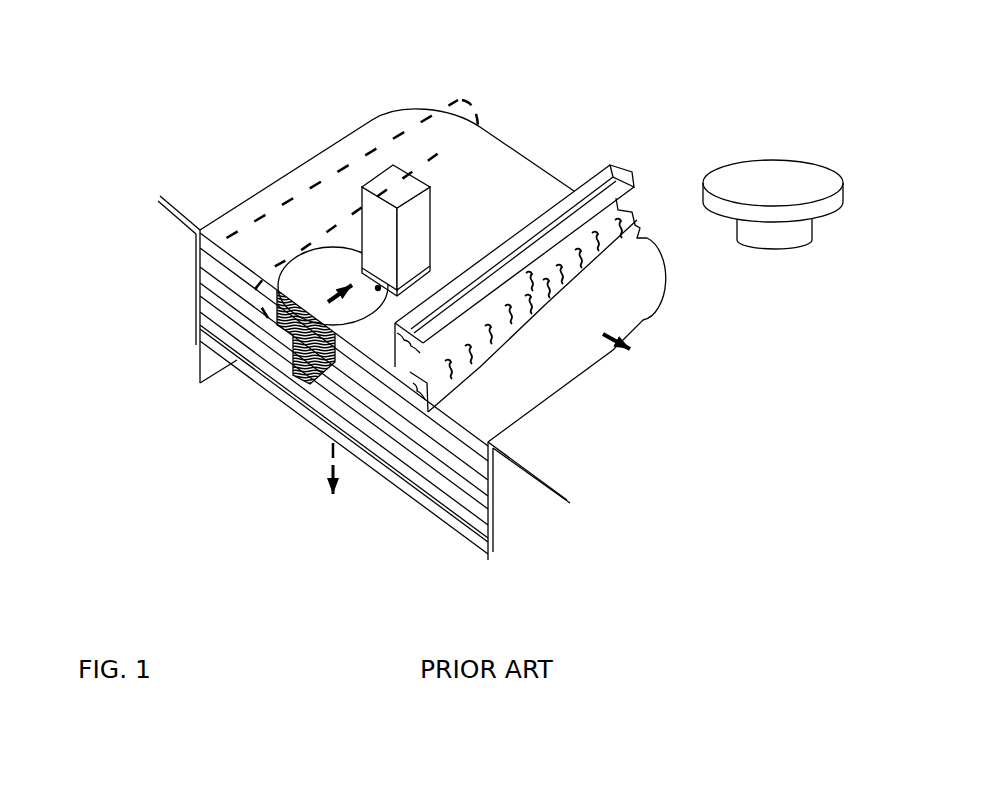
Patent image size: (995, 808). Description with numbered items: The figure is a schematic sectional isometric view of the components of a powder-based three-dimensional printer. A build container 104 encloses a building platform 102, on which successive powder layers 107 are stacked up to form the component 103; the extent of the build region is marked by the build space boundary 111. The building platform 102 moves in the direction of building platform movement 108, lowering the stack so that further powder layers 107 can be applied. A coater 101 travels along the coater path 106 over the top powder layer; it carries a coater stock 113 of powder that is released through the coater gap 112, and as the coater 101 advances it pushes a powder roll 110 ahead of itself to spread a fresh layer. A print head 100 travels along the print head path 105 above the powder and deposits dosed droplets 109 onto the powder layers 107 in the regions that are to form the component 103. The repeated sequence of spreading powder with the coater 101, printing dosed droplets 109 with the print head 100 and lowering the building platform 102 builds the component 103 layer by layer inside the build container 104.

The print head 100 is at (417, 240).
The coater 101 is at (562, 223).
The building platform 102 is at (255, 365).
The component 103 is at (306, 271).
The build container 104 is at (200, 297).
The print head path 105 is at (371, 142).
The coater path 106 is at (582, 320).
The powder layers 107 is at (495, 493).
The direction of building platform movement 108 is at (327, 468).
The dosed droplets 109 is at (384, 292).
The powder roll 110 is at (612, 228).
The build space boundary 111 is at (311, 156).
The coater gap 112 is at (403, 390).
The coater stock 113 is at (406, 368).